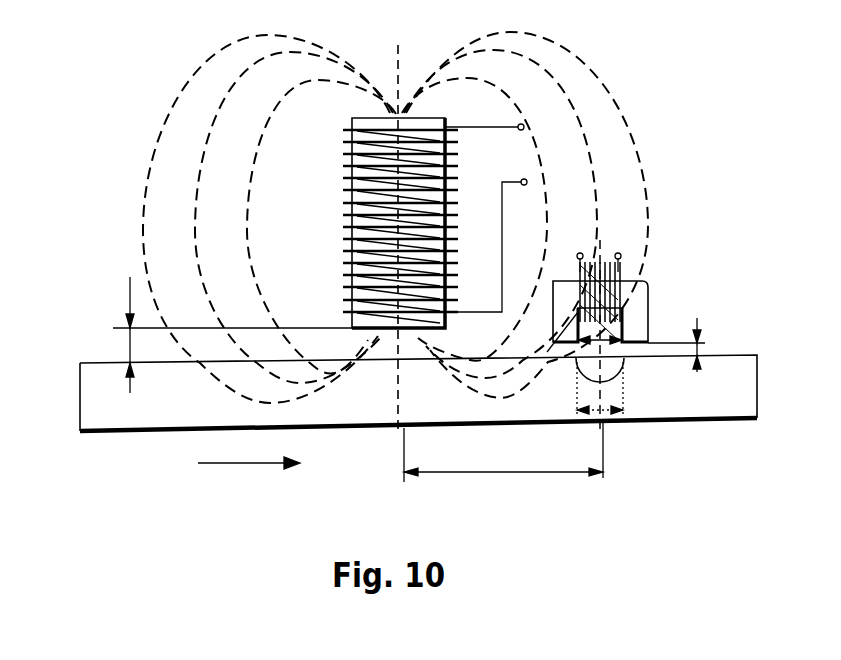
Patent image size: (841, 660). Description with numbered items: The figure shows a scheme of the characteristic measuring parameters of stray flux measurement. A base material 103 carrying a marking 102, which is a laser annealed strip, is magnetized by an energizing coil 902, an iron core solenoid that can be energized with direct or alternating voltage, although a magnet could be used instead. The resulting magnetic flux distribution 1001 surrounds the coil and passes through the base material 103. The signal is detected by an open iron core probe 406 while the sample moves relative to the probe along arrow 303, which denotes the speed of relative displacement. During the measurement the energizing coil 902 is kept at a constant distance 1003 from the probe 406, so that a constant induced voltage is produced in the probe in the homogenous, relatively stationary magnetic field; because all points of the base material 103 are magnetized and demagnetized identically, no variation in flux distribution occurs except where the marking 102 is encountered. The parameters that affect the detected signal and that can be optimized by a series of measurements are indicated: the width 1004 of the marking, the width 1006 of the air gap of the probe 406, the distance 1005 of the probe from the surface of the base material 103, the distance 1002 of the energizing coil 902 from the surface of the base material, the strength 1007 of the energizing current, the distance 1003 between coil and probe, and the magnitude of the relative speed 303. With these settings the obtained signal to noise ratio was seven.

The marking 102 is at (125, 422).
The energizing coil 902 is at (370, 118).
The strength of the energizing current 1007 is at (518, 155).
The magnetic field lines 1001 is at (170, 190).
The distance of the energizing coil from the surface of the base material 1002 is at (130, 346).
The open iron core probe 406 is at (637, 288).
The width of the air gap of probe 1006 is at (607, 335).
The distance of the probe from the surface of the base material 1005 is at (698, 349).
The base material 103 is at (608, 373).
The width of the marking 1004 is at (611, 410).
The distance of the energizing coil from the probe 1003 is at (495, 473).
The speed of relative displacement 303 is at (247, 463).